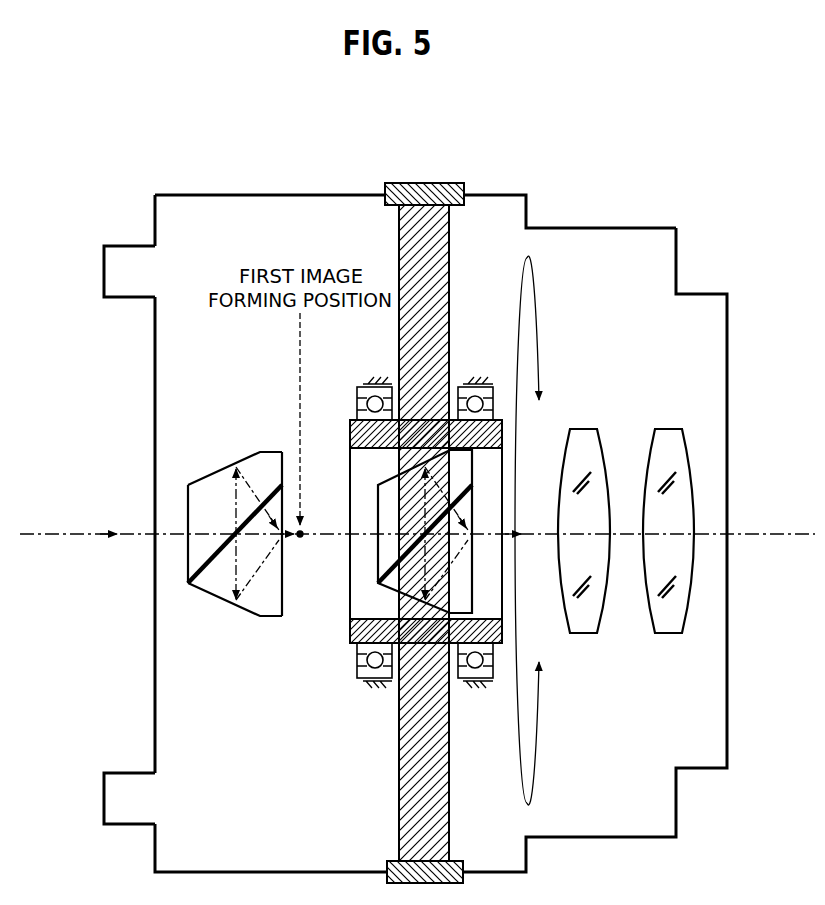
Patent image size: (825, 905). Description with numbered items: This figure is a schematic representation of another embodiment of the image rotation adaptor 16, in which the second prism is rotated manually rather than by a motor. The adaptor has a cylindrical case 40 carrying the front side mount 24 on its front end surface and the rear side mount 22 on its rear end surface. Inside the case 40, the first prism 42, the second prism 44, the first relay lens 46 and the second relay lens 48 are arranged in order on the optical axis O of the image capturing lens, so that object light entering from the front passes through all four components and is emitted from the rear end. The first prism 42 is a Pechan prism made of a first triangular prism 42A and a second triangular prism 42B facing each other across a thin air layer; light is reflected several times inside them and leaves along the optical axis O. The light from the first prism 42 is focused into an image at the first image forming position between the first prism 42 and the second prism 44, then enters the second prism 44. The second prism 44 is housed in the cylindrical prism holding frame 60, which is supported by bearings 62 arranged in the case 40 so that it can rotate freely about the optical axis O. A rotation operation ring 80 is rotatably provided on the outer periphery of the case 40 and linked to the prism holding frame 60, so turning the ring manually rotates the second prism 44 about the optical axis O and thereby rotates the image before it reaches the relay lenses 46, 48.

The image rotation adaptor 16 is at (410, 519).
The rear side mount 22 is at (715, 322).
The front side mount 24 is at (112, 270).
The case 40 is at (623, 228).
The first prism 42 is at (235, 526).
The first triangular prism 42A is at (205, 482).
The second triangular prism 42B is at (207, 588).
The second prism 44 is at (385, 556).
The first relay lens 46 is at (584, 429).
The second relay lens 48 is at (667, 429).
The prism holding frame 60 is at (352, 630).
The bearings 62 is at (370, 382).
The rotation operation ring 80 is at (441, 183).
The optical axis O is at (57, 533).